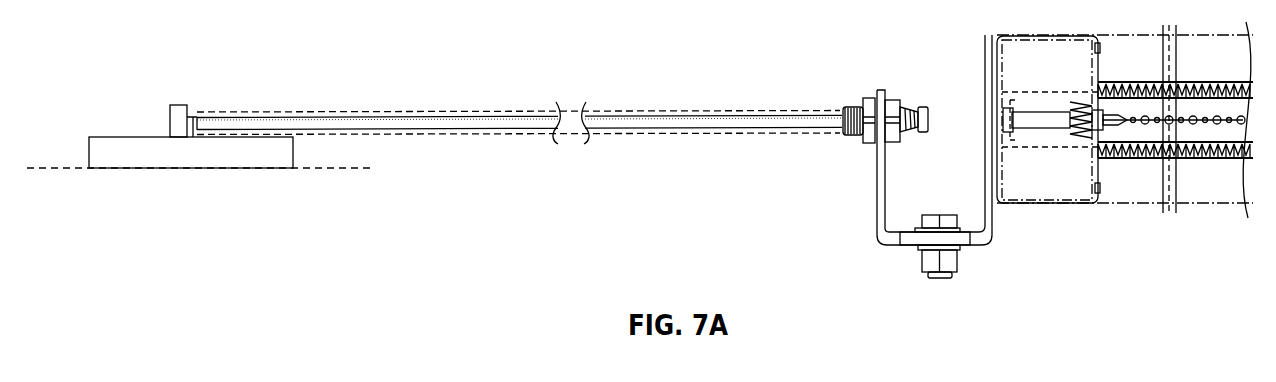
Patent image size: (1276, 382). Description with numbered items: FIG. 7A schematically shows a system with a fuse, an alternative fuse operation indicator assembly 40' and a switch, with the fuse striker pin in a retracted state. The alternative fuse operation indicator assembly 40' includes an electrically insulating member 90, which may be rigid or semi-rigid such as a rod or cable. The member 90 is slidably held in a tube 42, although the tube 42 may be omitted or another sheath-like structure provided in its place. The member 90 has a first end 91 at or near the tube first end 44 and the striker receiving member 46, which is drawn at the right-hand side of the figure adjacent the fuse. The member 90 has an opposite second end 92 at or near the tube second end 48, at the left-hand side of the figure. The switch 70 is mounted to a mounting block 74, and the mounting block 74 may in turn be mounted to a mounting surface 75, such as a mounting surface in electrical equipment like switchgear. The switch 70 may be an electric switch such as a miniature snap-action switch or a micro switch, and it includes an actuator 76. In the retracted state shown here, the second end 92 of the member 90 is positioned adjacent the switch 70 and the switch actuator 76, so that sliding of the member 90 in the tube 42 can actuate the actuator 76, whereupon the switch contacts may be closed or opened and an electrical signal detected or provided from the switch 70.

The alternative fuse operation indicator assembly 40' is at (697, 90).
The tube 42 is at (310, 113).
The tube first end 44 is at (850, 98).
The striker receiving member 46 is at (907, 98).
The tube second end 48 is at (200, 90).
The switch 70 is at (170, 120).
The mounting block 74 is at (132, 168).
The mounting surface 75 is at (338, 168).
The actuator 76 is at (193, 135).
The electrically insulating member 90 is at (458, 118).
The first end 91 is at (840, 120).
The second end 92 is at (220, 117).